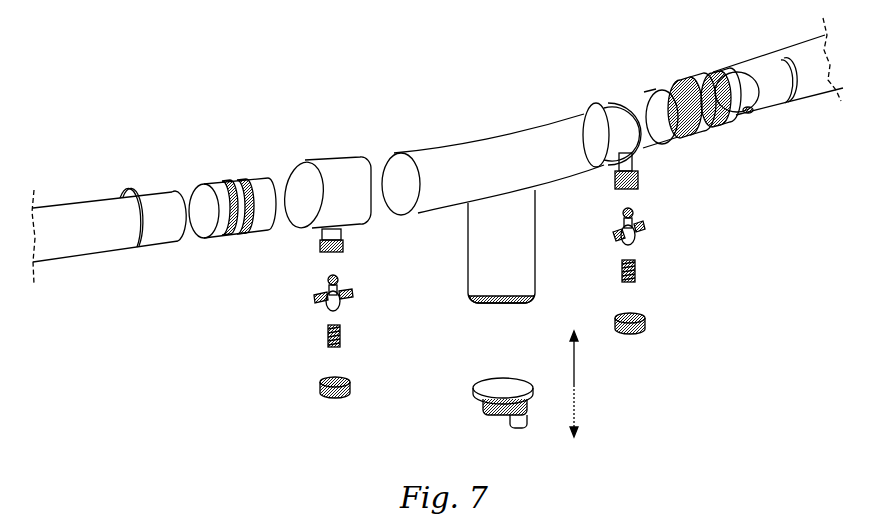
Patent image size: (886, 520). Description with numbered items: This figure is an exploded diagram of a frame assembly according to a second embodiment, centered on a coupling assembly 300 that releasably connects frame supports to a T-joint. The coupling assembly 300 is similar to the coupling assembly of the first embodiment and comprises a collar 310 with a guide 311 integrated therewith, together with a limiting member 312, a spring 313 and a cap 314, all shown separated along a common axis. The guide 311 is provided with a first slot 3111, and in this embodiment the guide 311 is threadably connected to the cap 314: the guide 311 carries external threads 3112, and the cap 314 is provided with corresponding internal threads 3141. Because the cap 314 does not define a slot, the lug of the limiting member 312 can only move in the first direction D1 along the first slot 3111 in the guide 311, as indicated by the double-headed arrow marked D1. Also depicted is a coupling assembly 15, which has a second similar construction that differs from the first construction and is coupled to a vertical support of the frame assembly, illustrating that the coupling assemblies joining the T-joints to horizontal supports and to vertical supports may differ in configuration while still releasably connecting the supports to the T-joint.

The coupling assembly 300 is at (583, 101).
The collar 310 is at (650, 95).
The guide 311 is at (638, 167).
The limiting member 312 is at (643, 225).
The spring 313 is at (635, 278).
The cap 314 is at (627, 337).
The first slot 3111 is at (608, 170).
The external threads 3112 is at (343, 247).
The internal threads 3141 is at (350, 378).
The coupling assembly 15 is at (497, 384).
The first direction D1 is at (561, 384).